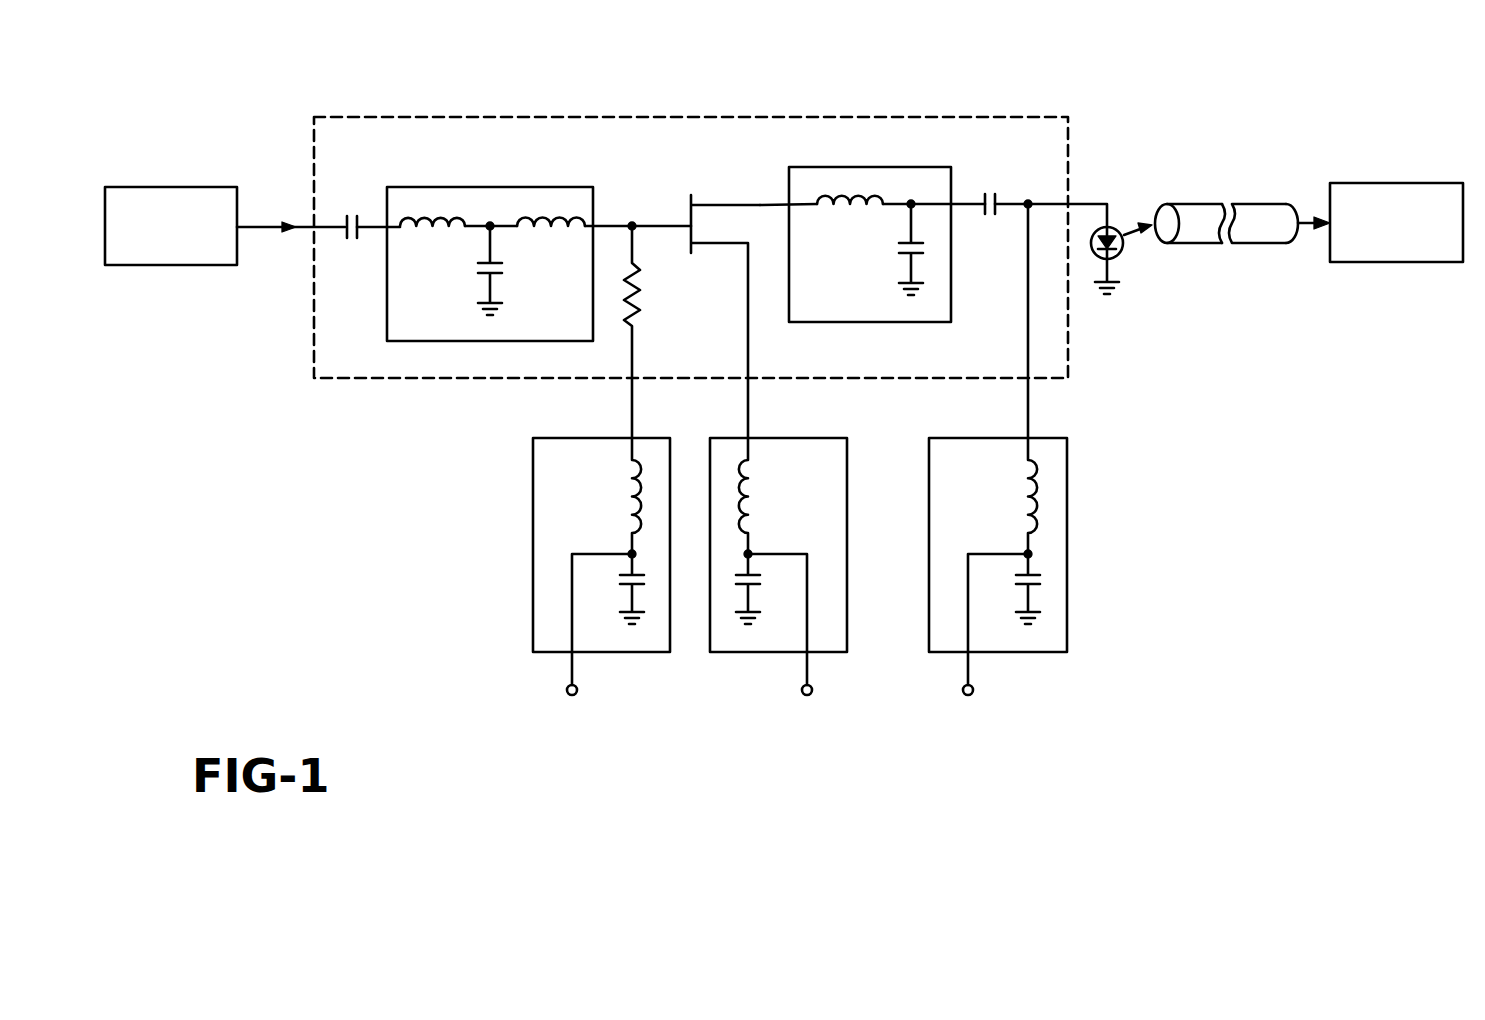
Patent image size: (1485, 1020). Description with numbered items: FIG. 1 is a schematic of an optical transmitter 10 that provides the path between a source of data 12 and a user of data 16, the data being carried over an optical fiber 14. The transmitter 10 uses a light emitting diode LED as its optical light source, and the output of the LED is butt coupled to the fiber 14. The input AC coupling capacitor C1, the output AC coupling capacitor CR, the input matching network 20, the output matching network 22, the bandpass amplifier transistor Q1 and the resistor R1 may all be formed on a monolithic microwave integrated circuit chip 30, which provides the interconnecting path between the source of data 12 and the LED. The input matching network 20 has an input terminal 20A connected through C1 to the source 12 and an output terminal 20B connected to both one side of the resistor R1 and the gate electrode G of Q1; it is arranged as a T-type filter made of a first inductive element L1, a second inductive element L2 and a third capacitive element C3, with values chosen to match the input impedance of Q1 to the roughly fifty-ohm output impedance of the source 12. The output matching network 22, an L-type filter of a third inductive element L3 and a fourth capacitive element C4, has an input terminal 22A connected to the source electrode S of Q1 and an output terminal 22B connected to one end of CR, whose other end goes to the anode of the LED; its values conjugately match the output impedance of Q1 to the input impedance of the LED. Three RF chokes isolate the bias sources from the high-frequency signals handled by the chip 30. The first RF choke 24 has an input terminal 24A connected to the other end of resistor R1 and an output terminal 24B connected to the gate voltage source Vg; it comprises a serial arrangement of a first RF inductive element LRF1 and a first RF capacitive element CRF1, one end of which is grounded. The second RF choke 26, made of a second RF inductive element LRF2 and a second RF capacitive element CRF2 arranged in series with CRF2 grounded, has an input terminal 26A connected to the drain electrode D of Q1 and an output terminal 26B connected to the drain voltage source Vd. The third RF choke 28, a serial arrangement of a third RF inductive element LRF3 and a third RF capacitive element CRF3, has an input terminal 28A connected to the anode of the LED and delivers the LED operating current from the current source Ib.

The optical transmitter 10 is at (985, 97).
The source of data 12 is at (123, 187).
The optical fiber 14 is at (1195, 204).
The user of data 16 is at (1363, 183).
The input matching network 20 is at (480, 187).
The input terminal of input matching network 20A is at (398, 232).
The output terminal of input matching network 20B is at (590, 232).
The output matching network 22 is at (897, 167).
The input terminal of output matching network 22A is at (806, 204).
The output terminal of output matching network 22B is at (945, 204).
The first RF choke 24 is at (533, 600).
The input terminal of first RF choke 24A is at (632, 445).
The output terminal of first RF choke 24B is at (632, 558).
The second RF choke 26 is at (847, 622).
The input terminal of second RF choke 26A is at (752, 446).
The output terminal of second RF choke 26B is at (748, 558).
The third RF choke 28 is at (929, 508).
The input terminal of third RF choke 28A is at (1028, 446).
The MMIC chip 30 is at (370, 118).
The input AC coupling capacitor C1 is at (350, 238).
The third capacitive element C3 is at (484, 276).
The fourth capacitive element C4 is at (905, 256).
The output AC coupling capacitor CR is at (993, 215).
The first inductive element L1 is at (433, 213).
The second inductive element L2 is at (546, 212).
The third inductive element L3 is at (872, 210).
The resistor R1 is at (640, 322).
The bandpass amplifier Q1 is at (690, 205).
The gate terminal G is at (673, 222).
The drain terminal D is at (701, 205).
The source terminal S is at (735, 254).
The light emitting diode LED is at (1122, 250).
The first RF inductive element LRF1 is at (632, 498).
The second RF inductive element LRF2 is at (748, 498).
The third RF inductive element LRF3 is at (1028, 498).
The first RF capacitive element CRF1 is at (624, 576).
The second RF capacitive element CRF2 is at (758, 576).
The third RF capacitive element CRF3 is at (1020, 576).
The source of voltage Vg is at (574, 696).
The source voltage Vd is at (807, 696).
The source of current Ib is at (968, 696).